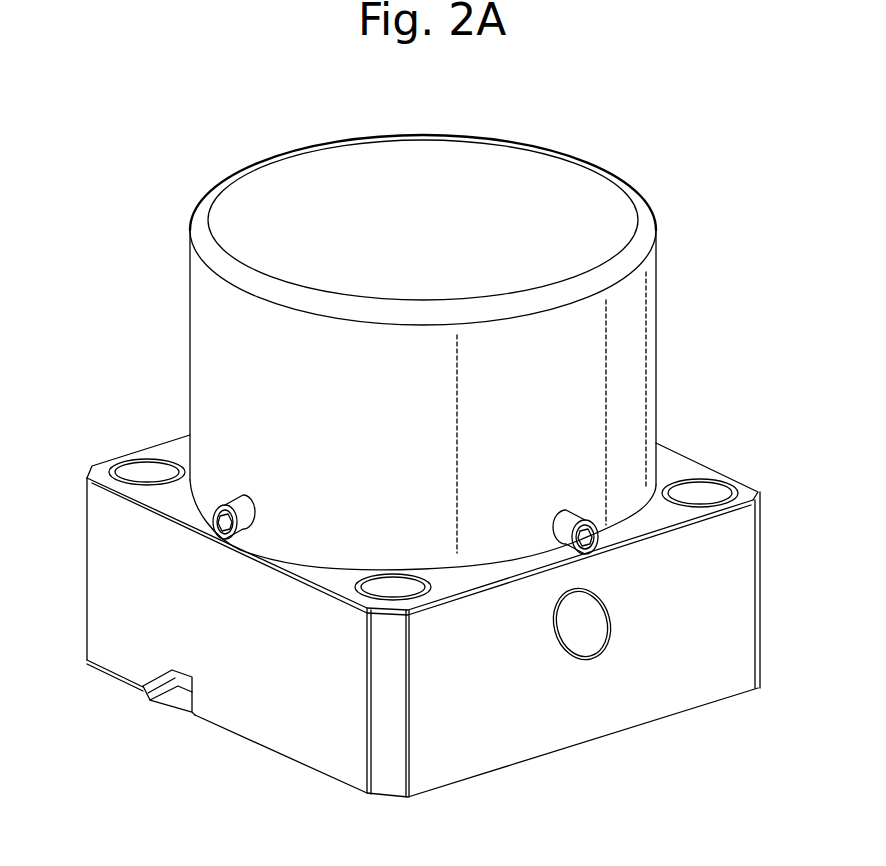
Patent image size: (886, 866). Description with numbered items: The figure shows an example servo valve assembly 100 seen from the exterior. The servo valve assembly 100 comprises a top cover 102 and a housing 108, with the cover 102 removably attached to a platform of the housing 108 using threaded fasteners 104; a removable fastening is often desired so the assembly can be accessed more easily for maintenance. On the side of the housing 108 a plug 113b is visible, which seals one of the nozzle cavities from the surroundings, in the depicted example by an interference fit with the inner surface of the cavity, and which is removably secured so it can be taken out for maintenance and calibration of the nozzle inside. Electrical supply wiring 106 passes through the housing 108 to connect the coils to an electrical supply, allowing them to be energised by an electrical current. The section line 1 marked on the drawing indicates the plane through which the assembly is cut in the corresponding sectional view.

The section line 1 is at (607, 160).
The servo valve assembly 100 is at (177, 143).
The top cover 102 is at (345, 160).
The threaded fasteners 104 is at (213, 517).
The electrical supply wiring 106 is at (168, 698).
The housing 108 is at (733, 570).
The plug 113b is at (582, 637).